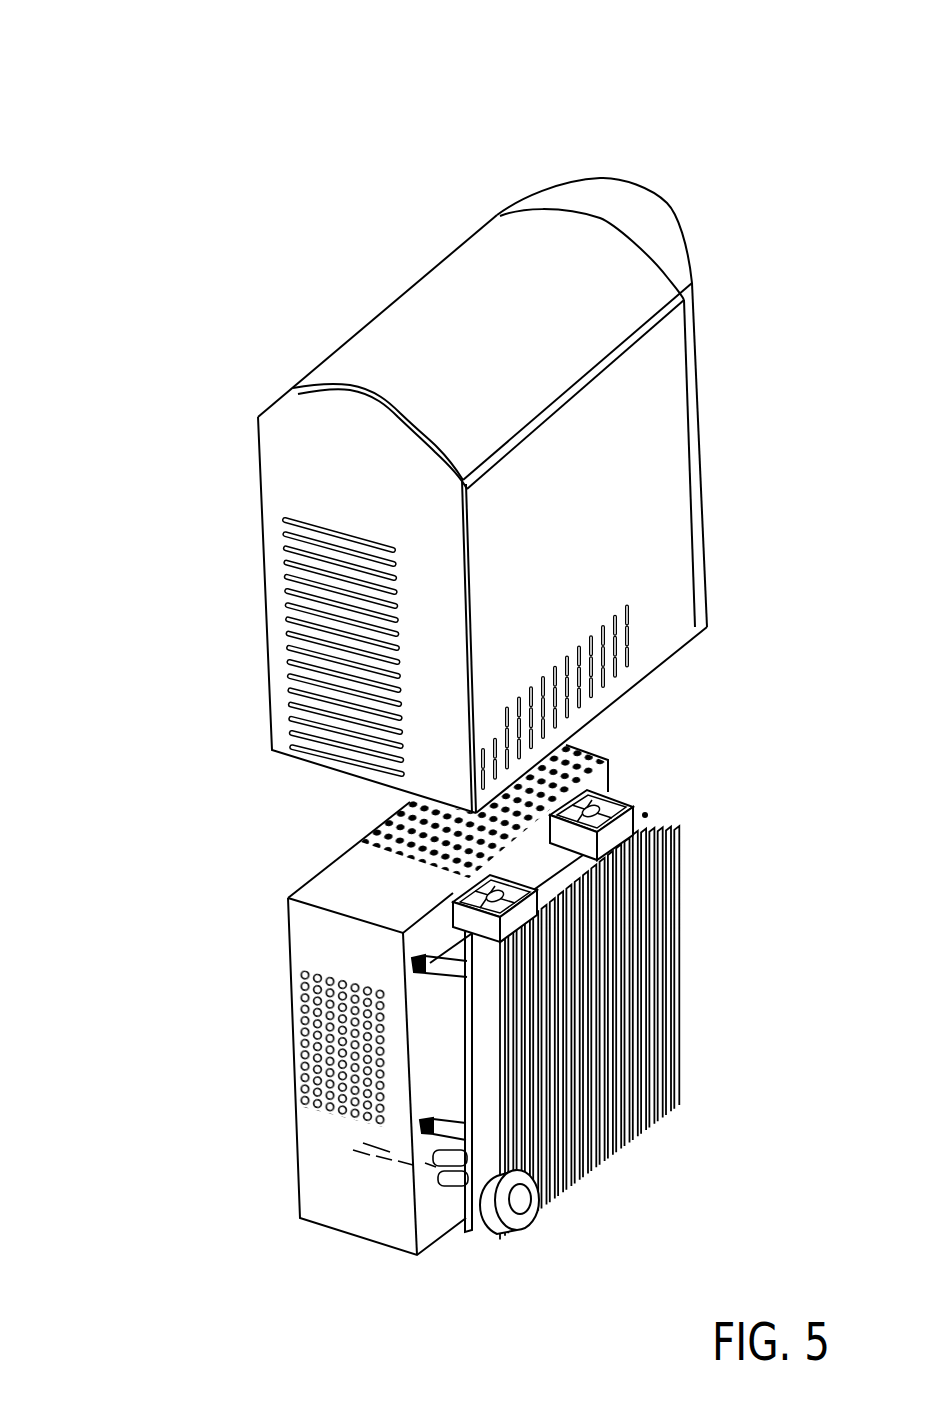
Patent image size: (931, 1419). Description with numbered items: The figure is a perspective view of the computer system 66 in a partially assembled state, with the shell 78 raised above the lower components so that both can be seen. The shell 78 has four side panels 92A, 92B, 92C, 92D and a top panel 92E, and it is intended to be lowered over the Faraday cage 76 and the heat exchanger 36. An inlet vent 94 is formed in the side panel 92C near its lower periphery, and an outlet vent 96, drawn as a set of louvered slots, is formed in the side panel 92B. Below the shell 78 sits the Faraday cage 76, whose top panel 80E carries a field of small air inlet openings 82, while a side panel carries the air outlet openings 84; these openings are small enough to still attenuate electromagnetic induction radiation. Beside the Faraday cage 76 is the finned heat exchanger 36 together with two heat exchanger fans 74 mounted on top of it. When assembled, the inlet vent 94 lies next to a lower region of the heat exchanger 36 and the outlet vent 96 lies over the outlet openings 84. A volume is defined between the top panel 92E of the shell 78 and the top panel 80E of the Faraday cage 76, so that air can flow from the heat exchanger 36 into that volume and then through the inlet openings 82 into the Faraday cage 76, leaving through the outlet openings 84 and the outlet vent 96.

The computer system 66 is at (637, 80).
The shell 78 is at (707, 225).
The top panel 92E is at (457, 275).
The side panel 92D is at (718, 390).
The side panel 92B is at (297, 438).
The side panel 92A is at (230, 505).
The side panel 92C is at (660, 515).
The outlet vent 96 is at (292, 657).
The inlet vent 94 is at (622, 684).
The heat exchanger 36 is at (680, 1028).
The Faraday cage 76 is at (315, 1181).
The top panel 80E is at (315, 888).
The air outlet openings 84 is at (305, 1065).
The air inlet openings 82 is at (587, 753).
The heat exchanger fans 74 is at (630, 798).